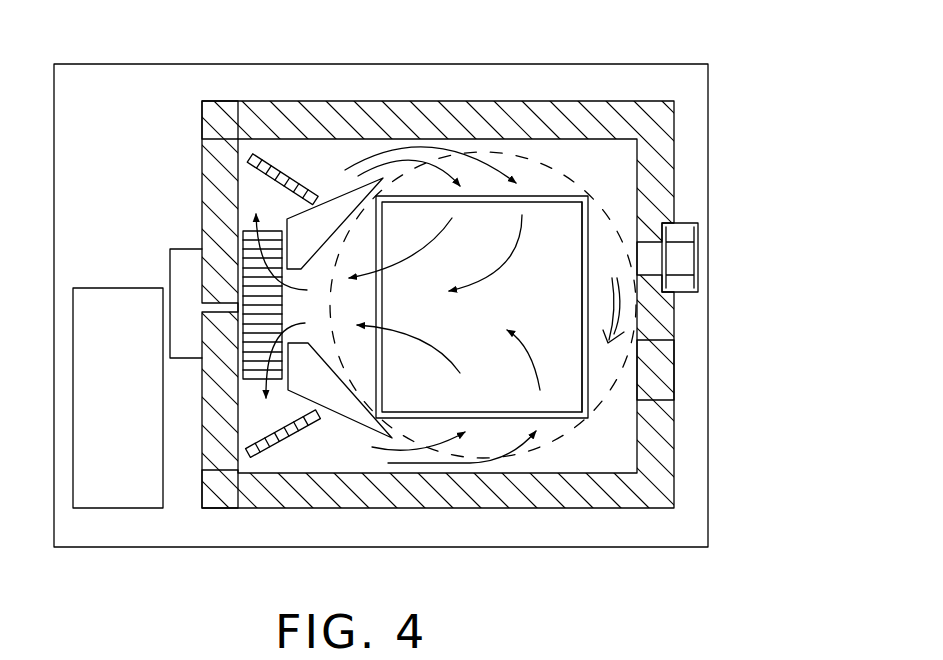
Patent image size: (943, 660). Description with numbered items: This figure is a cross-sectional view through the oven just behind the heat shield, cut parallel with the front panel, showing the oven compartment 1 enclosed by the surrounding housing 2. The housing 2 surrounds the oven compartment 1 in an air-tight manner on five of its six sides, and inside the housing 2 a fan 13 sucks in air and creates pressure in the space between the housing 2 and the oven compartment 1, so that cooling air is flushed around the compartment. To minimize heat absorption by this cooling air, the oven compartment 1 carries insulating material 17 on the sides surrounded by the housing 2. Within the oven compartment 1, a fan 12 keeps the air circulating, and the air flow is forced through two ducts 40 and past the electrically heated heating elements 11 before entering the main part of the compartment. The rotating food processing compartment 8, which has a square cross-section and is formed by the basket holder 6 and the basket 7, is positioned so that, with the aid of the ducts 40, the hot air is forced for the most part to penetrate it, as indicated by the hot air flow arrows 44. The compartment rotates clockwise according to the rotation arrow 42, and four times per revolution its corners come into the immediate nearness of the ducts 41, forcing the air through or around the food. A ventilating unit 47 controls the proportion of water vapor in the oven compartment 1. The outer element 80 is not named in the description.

The oven compartment 1 is at (627, 475).
The housing 2 is at (54, 253).
The basket holder 6 is at (542, 196).
The basket 7 is at (563, 203).
The food processing compartment 8 is at (562, 221).
The heating elements 11 is at (250, 160).
The fan 12 is at (277, 232).
The fan 13 is at (108, 425).
The insulating material 17 is at (222, 128).
The ducts 40 is at (332, 200).
The ducts 41 is at (362, 198).
The rotation arrow 42 is at (620, 317).
The hot air flow arrows 44 is at (420, 247).
The ventilating unit 47 is at (698, 250).
The housing 80 is at (125, 160).